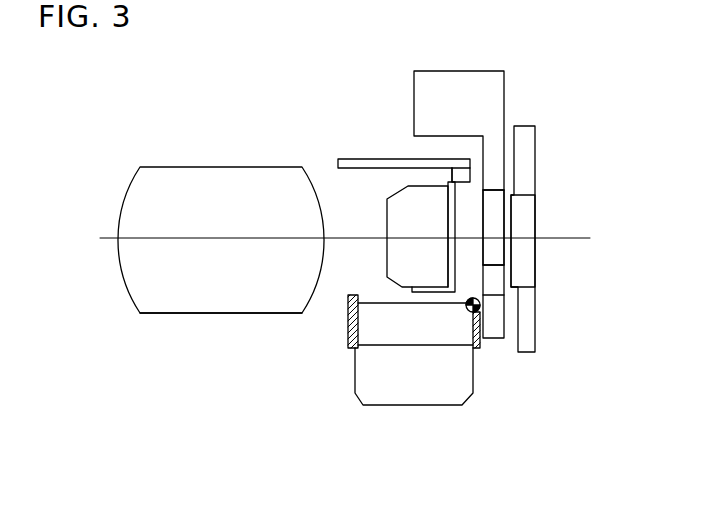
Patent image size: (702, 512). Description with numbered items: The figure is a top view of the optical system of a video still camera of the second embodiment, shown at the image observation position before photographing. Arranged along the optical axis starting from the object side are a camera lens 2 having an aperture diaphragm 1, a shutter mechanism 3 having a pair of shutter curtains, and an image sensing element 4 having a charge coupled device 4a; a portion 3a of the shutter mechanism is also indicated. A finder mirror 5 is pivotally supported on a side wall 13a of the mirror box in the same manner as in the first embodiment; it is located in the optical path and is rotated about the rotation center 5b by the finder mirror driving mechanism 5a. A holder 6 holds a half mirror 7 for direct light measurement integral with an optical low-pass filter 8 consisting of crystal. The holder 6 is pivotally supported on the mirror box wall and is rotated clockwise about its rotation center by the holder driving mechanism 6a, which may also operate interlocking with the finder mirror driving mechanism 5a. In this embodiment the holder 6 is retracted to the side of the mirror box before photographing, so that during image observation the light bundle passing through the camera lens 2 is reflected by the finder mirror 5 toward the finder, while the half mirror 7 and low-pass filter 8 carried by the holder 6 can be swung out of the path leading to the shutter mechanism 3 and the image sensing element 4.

The aperture diaphragm 1 is at (213, 128).
The camera lens 2 is at (188, 300).
The shutter mechanism 3 is at (493, 92).
The bracket portion 3a is at (488, 260).
The image sensing element 4 is at (527, 327).
The charge coupled device 4a is at (515, 220).
The finder mirror 5 is at (397, 223).
The finder mirror driving mechanism 5a is at (455, 173).
The rotation center 5b is at (448, 183).
The holder 6 is at (348, 338).
The holder driving mechanism 6a is at (459, 313).
The half mirror 7 is at (411, 406).
The optical low-pass filter 8 is at (390, 337).
The side wall 13a is at (352, 162).